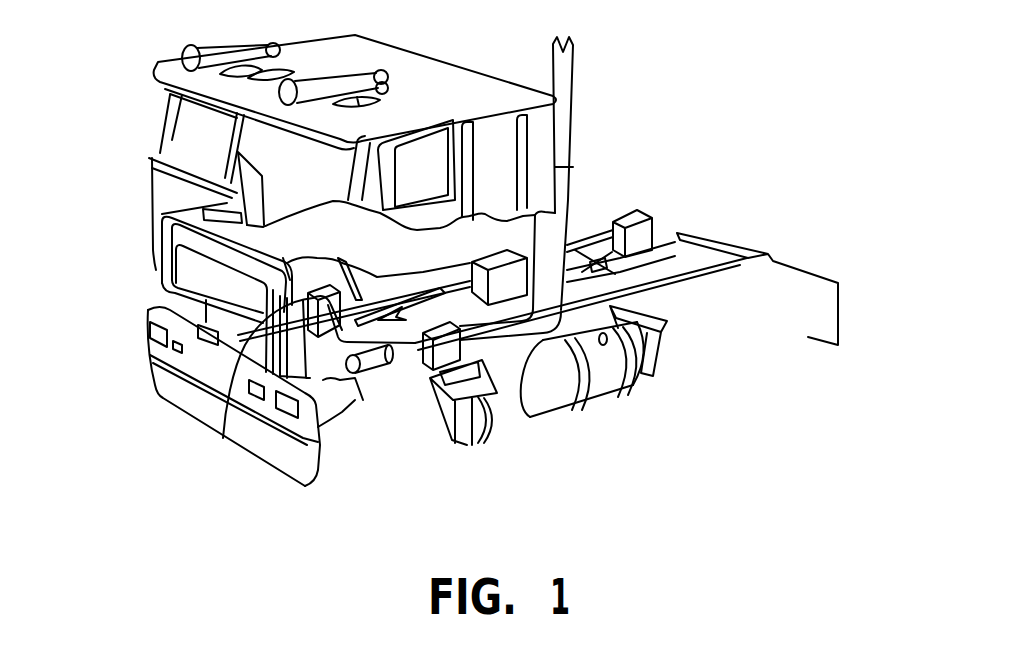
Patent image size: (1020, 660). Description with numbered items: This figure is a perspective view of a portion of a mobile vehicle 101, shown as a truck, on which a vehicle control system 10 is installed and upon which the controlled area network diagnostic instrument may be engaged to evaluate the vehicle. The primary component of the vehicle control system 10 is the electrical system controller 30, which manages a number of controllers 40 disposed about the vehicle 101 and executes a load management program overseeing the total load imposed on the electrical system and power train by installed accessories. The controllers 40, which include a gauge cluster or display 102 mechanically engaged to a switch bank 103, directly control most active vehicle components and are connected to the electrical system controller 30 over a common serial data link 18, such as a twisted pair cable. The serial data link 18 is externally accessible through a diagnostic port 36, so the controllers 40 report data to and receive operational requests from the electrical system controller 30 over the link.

The mobile vehicle 101 is at (476, 31).
The vehicle control system 10 is at (377, 402).
The gauge cluster 102 is at (225, 170).
The switch bank 103 is at (200, 217).
The serial data link 18 is at (163, 273).
The diagnostic port 36 is at (213, 338).
The electrical system controller 30 is at (527, 258).
The controllers 40 is at (168, 483).